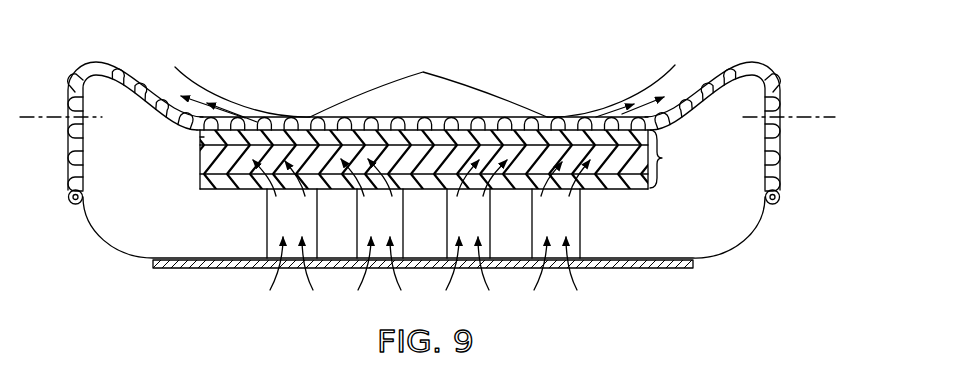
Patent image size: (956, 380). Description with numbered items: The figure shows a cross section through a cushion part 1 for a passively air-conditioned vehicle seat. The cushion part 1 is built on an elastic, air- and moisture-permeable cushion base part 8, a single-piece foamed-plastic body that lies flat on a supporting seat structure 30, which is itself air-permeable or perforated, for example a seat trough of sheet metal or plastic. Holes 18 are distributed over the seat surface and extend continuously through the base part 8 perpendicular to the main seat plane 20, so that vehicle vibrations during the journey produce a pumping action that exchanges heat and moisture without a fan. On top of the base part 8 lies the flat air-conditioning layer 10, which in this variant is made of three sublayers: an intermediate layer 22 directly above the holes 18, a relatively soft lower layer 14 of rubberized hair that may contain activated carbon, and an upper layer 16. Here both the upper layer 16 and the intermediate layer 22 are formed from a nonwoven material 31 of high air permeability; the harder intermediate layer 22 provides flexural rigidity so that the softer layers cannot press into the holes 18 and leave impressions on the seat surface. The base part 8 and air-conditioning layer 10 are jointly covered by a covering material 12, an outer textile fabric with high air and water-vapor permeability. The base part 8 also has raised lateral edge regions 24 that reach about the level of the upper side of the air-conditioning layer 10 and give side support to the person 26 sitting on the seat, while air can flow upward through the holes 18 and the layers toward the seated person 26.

The cushion part 1 is at (427, 170).
The cushion base part 8 is at (145, 216).
The air-conditioning layer 10 is at (442, 159).
The covering material 12 is at (387, 124).
The lower layer 14 is at (544, 155).
The upper layer 16 is at (509, 137).
The holes 18 is at (303, 228).
The main seat plane 20 is at (807, 117).
The intermediate layer 22 is at (622, 178).
The lateral edge regions 24 is at (108, 90).
The person 26 is at (457, 90).
The supporting seat structure 30 is at (643, 270).
The nonwoven material 31 is at (341, 137).